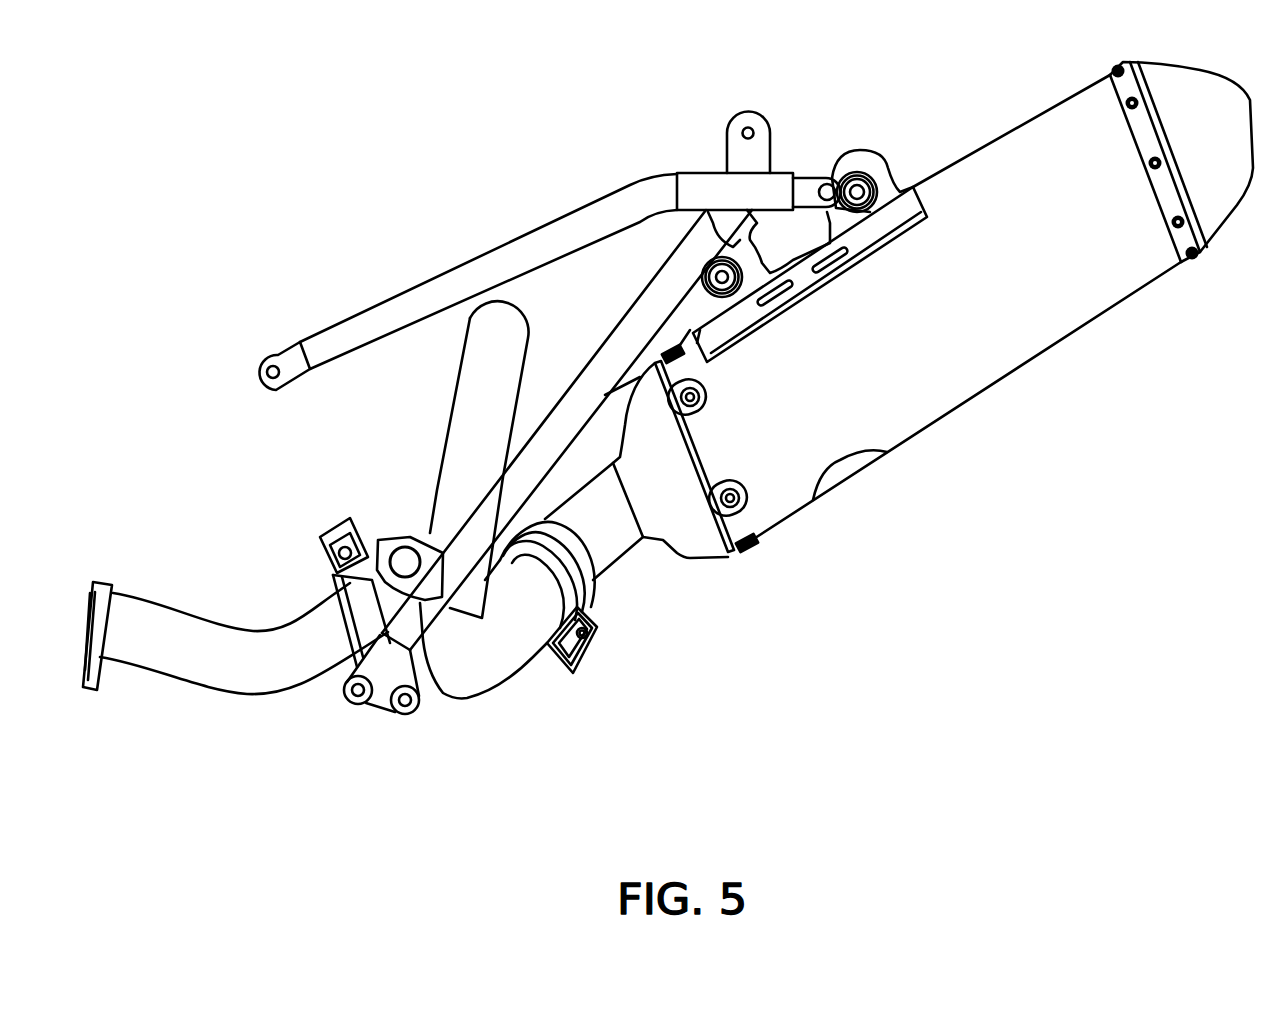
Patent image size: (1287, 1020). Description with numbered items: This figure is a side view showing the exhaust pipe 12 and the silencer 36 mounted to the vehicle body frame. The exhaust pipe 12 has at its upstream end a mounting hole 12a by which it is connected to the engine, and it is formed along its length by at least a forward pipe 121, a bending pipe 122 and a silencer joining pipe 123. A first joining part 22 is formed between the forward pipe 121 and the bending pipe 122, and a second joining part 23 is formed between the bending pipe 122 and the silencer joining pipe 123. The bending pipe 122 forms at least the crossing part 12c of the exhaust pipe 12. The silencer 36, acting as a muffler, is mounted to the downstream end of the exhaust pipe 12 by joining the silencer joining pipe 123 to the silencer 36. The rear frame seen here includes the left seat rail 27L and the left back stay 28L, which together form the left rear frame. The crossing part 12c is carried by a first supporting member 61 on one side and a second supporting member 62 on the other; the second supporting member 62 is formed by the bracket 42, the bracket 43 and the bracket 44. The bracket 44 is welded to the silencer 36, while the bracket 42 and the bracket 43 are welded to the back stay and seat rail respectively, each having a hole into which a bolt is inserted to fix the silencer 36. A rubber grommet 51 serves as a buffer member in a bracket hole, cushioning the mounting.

The exhaust pipe 12 is at (376, 554).
The mounting hole 12a is at (92, 690).
The crossing part 12c is at (425, 382).
The forward pipe 121 is at (197, 682).
The bending pipe 122 is at (457, 688).
The silencer joining pipe 123 is at (622, 560).
The first joining part 22 is at (318, 560).
The second joining part 23 is at (572, 685).
The left seat rail 27L is at (380, 303).
The left back stay 28L is at (565, 393).
The silencer 36 is at (985, 393).
The bracket 42 is at (750, 262).
The bracket 43 is at (835, 175).
The bracket 44 is at (910, 188).
The grommet 51 is at (860, 152).
The first supporting member 61 is at (399, 522).
The second supporting member 62 is at (885, 143).